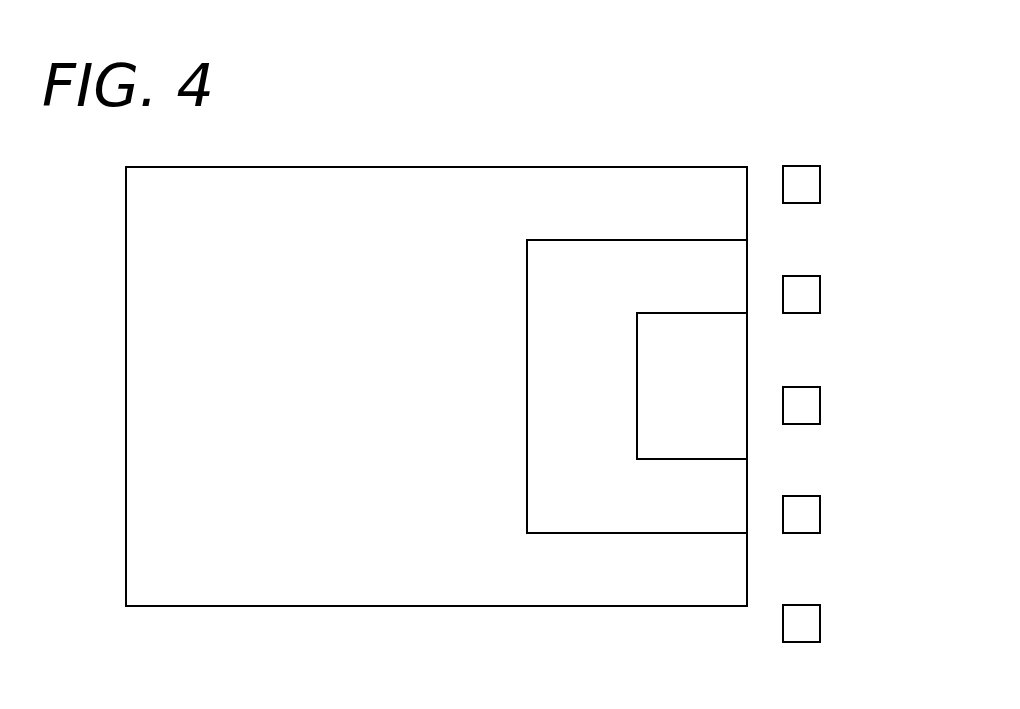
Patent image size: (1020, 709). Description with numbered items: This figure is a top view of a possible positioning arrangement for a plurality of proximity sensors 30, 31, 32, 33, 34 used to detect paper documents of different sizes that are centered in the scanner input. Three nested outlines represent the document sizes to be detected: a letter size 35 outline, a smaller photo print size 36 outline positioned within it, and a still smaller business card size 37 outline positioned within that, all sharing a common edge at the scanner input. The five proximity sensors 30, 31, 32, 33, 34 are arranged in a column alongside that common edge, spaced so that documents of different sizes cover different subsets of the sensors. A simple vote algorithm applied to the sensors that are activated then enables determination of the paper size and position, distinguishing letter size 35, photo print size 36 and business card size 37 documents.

The proximity sensor 30 is at (807, 183).
The proximity sensor 31 is at (802, 293).
The proximity sensor 32 is at (800, 403).
The proximity sensor 33 is at (807, 513).
The proximity sensor 34 is at (802, 625).
The letter size 35 is at (272, 187).
The photo print size 36 is at (578, 252).
The business card size 37 is at (677, 333).